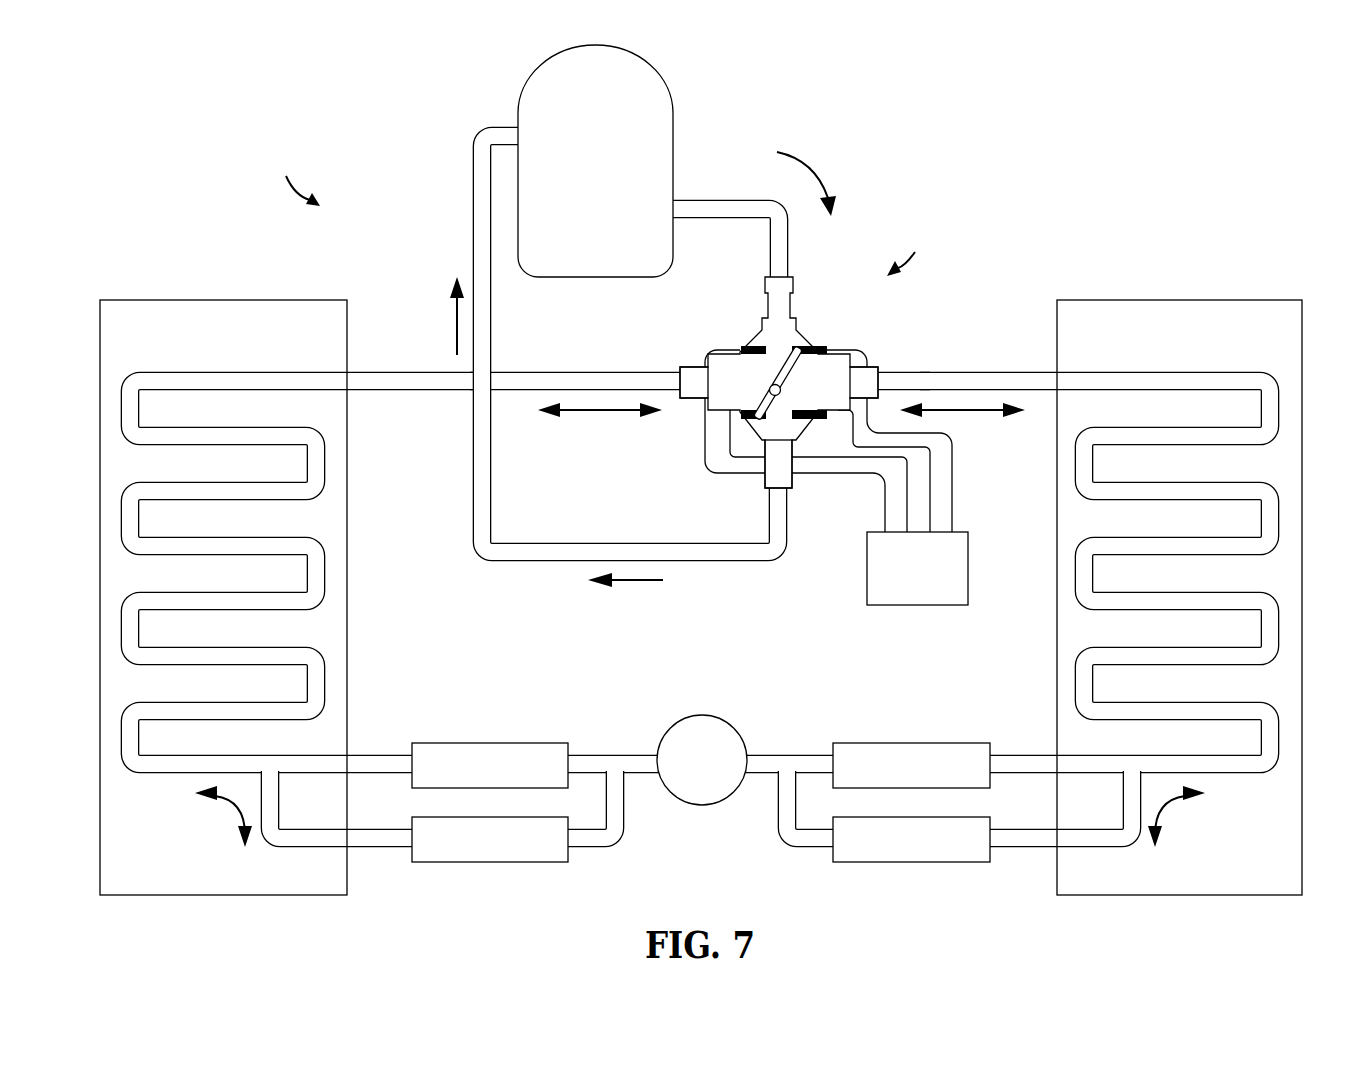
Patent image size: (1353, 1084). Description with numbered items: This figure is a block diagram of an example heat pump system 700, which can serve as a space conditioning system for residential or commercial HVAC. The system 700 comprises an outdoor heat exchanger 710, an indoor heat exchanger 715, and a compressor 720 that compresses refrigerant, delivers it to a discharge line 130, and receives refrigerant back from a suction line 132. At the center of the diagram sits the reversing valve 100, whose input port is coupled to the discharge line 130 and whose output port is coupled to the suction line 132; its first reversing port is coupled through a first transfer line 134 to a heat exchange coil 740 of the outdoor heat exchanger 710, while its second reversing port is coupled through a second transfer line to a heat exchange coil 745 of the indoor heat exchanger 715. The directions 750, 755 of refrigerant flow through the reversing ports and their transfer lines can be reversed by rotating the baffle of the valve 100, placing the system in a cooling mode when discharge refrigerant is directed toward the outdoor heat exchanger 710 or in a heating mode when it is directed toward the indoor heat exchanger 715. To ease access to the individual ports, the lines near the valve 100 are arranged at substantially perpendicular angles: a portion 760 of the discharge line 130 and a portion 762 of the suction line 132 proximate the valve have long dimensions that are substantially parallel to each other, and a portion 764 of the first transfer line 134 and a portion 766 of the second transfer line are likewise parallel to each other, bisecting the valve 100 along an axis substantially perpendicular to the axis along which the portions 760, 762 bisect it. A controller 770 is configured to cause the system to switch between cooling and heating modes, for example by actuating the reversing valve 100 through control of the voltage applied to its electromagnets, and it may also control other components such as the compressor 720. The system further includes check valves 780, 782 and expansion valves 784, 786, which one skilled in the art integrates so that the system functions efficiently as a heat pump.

The reversing valve 100 is at (916, 246).
The discharge line 130 is at (718, 200).
The suction line 132 is at (472, 246).
The first transfer line 134 is at (410, 372).
The heat pump system 700 is at (291, 174).
The outdoor heat exchanger 710 is at (245, 352).
The indoor heat exchanger 715 is at (1201, 352).
The compressor 720 is at (618, 175).
The heat exchange coil 740 is at (156, 775).
The heat exchange coil 745 is at (1244, 775).
The direction of refrigerant flow 750 is at (600, 420).
The direction of refrigerant flow 755 is at (960, 420).
The portion of the discharge line 760 is at (791, 238).
The portion of the suction line 762 is at (791, 496).
The portion of the first transfer line 764 is at (678, 366).
The portion of the second transfer line 766 is at (911, 366).
The controller 770 is at (937, 583).
The check valve 780 is at (490, 862).
The check valve 782 is at (934, 862).
The expansion valve 784 is at (490, 743).
The expansion valve 786 is at (934, 743).